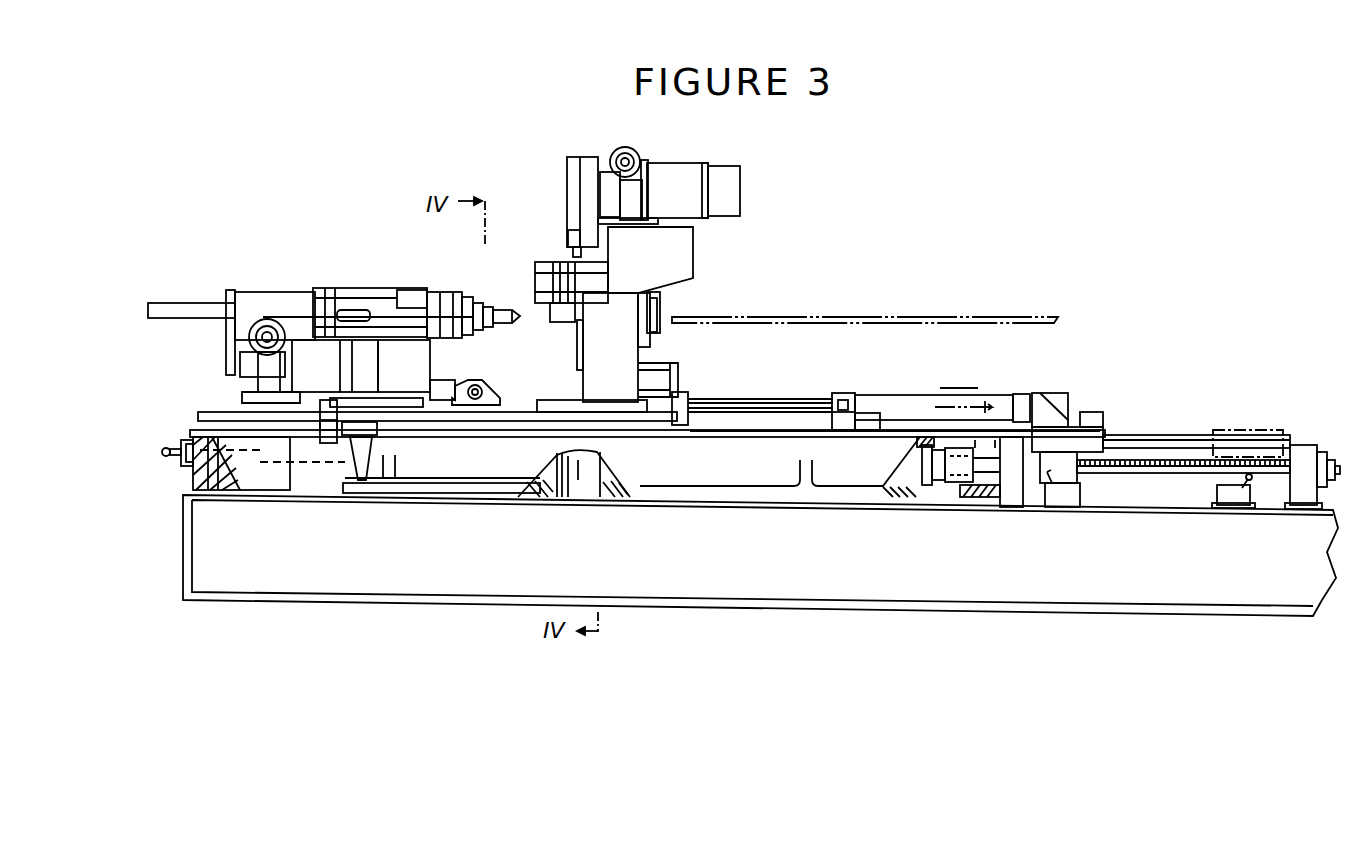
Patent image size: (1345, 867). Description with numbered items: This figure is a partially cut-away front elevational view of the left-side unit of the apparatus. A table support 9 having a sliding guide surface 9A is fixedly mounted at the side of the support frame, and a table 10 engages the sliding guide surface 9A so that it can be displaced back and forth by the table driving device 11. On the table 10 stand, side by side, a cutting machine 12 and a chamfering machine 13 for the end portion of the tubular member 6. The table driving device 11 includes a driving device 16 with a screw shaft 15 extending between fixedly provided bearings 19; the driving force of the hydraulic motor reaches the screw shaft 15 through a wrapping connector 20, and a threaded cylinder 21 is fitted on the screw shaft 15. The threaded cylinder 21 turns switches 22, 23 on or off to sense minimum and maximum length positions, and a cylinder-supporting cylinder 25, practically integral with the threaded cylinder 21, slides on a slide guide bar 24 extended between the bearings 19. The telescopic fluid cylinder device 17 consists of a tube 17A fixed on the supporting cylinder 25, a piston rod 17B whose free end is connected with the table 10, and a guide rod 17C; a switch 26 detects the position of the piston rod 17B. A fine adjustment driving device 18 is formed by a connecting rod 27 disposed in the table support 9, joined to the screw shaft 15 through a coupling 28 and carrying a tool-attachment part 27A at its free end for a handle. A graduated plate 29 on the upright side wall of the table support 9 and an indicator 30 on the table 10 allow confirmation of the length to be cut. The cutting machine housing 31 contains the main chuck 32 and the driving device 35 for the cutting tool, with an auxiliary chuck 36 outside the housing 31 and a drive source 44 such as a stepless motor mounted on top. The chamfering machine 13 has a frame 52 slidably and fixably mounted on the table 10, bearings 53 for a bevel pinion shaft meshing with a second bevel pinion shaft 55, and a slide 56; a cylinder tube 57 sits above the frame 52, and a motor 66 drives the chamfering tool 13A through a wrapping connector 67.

The tubular member 6 is at (778, 316).
The table support 9 is at (660, 462).
The sliding guide surface 9A is at (738, 430).
The table 10 is at (522, 412).
The table driving device 11 is at (930, 386).
The cutting machine 12 is at (747, 176).
The chamfering machine 13 is at (370, 283).
The chamfering tool 13A is at (518, 312).
The screw shaft 15 is at (1143, 474).
The driving device 16 is at (1190, 480).
The fluid cylinder device 17 is at (993, 394).
The tube 17A is at (873, 392).
The piston rod 17B is at (800, 388).
The guide rod 17C is at (735, 400).
The fine adjustment driving device 18 is at (168, 460).
The bearings 19 is at (1012, 480).
The wrapping connector 20 is at (1329, 454).
The threaded cylinder 21 is at (1065, 463).
The switch 22 is at (1063, 490).
The switch 23 is at (1232, 494).
The slide guide bar 24 is at (1150, 436).
The cylinder-supporting cylinder 25 is at (1053, 436).
The switch 26 is at (868, 430).
The connecting rod 27 is at (229, 462).
The tool-attachment part 27A is at (175, 436).
The coupling 28 is at (960, 482).
The graduated plate 29 is at (437, 492).
The indicator 30 is at (358, 468).
The cutting machine housing 31 is at (618, 364).
The main chuck 32 is at (655, 300).
The driving device 35 is at (1251, 428).
The auxiliary chuck 36 is at (558, 323).
The drive source 44 is at (692, 194).
The frame 52 is at (413, 408).
The bearings 53 is at (490, 385).
The second bevel pinion shaft 55 is at (432, 380).
The slide 56 is at (333, 437).
The cylinder tube 57 is at (336, 287).
The motor 66 is at (308, 390).
The wrapping connector 67 is at (227, 342).